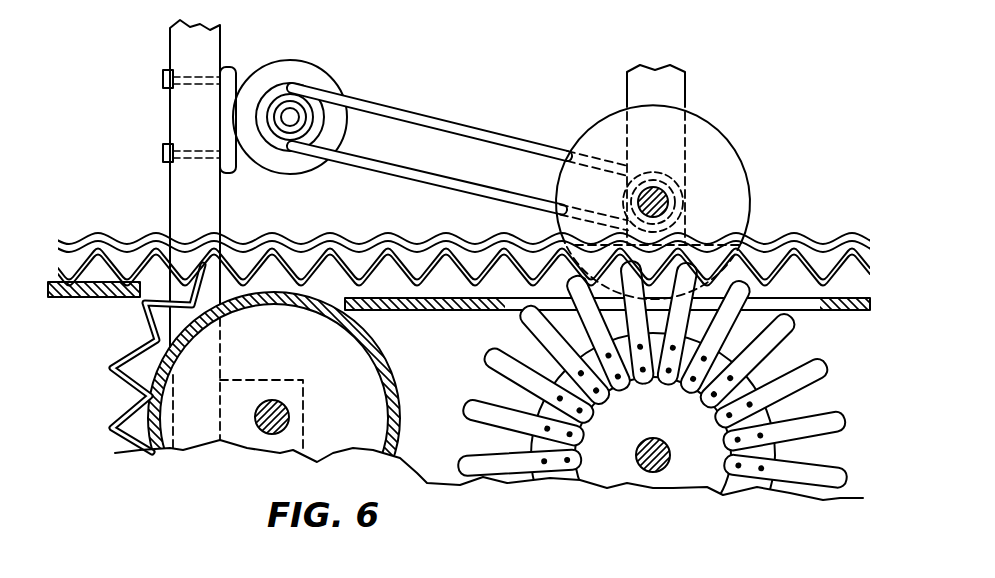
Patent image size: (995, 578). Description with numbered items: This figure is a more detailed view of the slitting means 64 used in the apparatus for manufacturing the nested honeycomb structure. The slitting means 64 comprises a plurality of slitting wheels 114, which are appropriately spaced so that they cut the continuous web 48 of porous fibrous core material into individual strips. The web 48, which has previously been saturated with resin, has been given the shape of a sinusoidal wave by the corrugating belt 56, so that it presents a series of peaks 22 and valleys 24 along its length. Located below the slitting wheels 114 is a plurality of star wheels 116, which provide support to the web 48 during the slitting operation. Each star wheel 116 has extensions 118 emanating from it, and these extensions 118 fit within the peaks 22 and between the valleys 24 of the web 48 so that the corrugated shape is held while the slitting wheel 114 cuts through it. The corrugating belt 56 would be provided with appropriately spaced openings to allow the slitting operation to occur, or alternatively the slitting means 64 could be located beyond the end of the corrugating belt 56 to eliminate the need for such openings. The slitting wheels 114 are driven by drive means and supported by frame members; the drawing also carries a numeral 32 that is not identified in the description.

The peak 22 is at (760, 243).
The valley 24 is at (780, 277).
The underlayment sheet 32 is at (812, 242).
The web 48 is at (840, 246).
The corrugating belt 56 is at (474, 358).
The slitting means 64 is at (683, 182).
The slitting wheel 114 is at (749, 183).
The star wheel 116 is at (669, 418).
The extension 118 is at (812, 372).